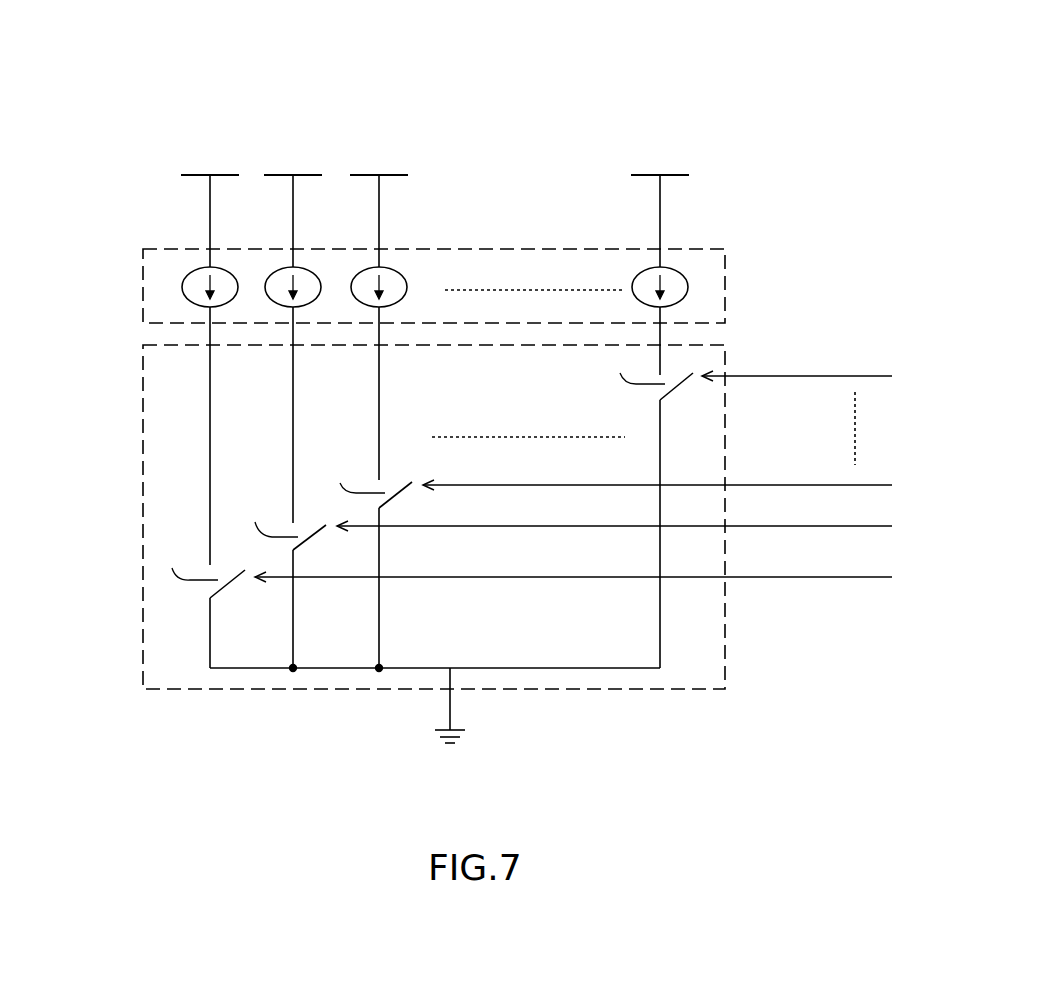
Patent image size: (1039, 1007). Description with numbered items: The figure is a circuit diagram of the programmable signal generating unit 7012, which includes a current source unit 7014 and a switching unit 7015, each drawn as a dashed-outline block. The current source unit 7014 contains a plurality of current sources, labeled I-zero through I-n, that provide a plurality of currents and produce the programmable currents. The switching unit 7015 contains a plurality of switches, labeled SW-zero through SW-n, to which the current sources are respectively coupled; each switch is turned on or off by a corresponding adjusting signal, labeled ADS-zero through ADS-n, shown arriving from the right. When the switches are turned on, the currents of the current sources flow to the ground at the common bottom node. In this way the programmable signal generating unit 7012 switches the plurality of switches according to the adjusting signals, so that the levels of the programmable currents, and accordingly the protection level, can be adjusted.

The programmable signal generating unit 7012 is at (1005, 80).
The current source unit 7014 is at (725, 269).
The switching unit 7015 is at (143, 385).